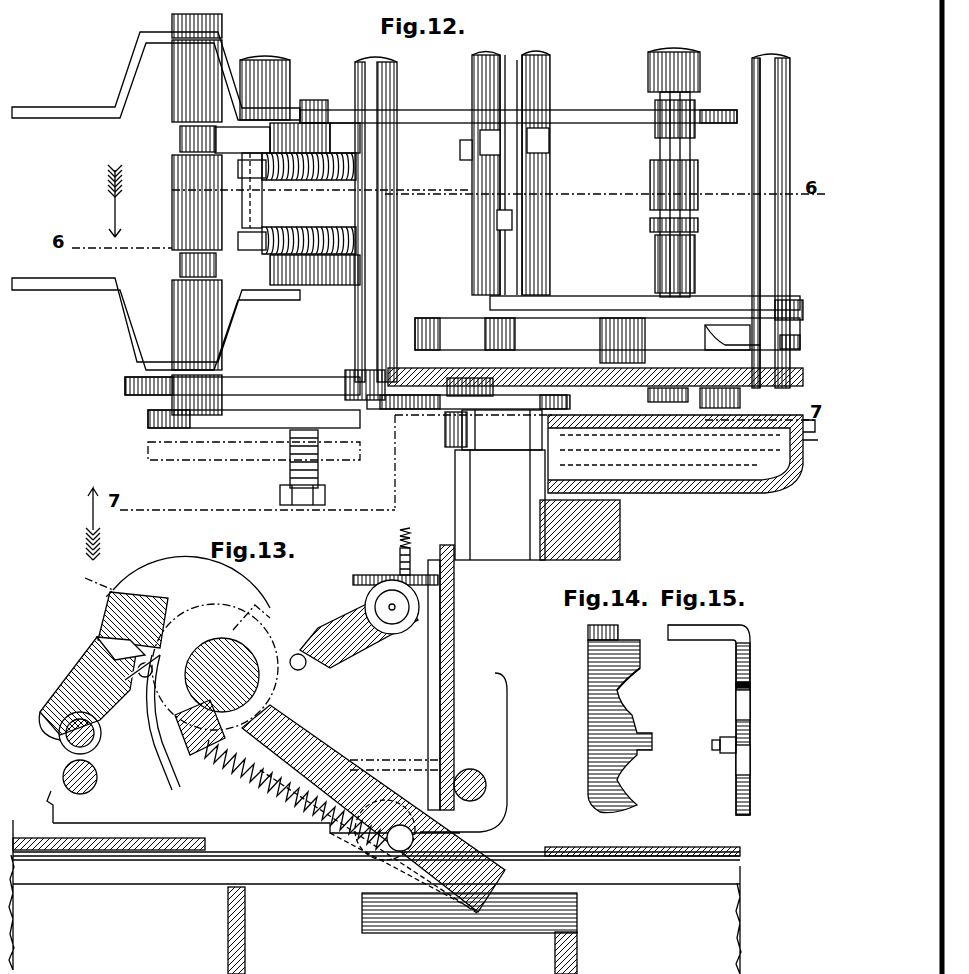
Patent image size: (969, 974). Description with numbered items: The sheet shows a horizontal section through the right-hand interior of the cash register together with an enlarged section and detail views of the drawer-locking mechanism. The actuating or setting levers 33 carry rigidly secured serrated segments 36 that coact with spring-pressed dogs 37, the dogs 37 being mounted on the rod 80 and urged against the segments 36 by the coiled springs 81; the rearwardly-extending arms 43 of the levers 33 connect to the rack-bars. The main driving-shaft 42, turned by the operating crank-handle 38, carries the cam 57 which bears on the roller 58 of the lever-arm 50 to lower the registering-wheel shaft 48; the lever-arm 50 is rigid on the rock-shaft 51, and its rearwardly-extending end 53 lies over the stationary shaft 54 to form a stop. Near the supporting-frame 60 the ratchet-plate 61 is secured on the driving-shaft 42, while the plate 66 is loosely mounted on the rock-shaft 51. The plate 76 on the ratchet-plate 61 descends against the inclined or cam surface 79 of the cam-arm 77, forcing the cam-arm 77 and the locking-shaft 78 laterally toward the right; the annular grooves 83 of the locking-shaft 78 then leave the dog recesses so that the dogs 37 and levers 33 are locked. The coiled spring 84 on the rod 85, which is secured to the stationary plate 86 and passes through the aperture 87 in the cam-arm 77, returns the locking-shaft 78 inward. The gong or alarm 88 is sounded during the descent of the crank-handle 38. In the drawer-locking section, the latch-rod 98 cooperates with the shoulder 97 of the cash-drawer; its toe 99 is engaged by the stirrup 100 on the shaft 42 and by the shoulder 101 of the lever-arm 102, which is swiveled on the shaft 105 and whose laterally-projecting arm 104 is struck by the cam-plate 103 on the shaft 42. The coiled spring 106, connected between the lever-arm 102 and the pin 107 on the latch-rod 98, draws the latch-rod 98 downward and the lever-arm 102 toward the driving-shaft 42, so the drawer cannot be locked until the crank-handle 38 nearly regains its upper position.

In FIG. 12, the actuating or setting lever 33 is at (85, 107).
In FIG. 12, the serrated segment 36 is at (318, 107).
In FIG. 12, the dog 37 is at (285, 100).
In FIG. 12, the operating crank-handle 38 is at (580, 530).
In FIG. 12, the main driving-shaft 42 is at (516, 173).
In FIG. 13, the main driving-shaft 42 is at (280, 703).
In FIG. 12, the rearwardly-extending arm 43 is at (687, 172).
In FIG. 12, the registering-wheel shaft 48 is at (485, 183).
In FIG. 12, the lever-arm 50 is at (570, 296).
In FIG. 12, the rock-shaft 51 is at (700, 265).
In FIG. 12, the rearwardly-extending end 53 is at (795, 310).
In FIG. 12, the shaft 54 is at (790, 243).
In FIG. 12, the cam 57 is at (607, 334).
In FIG. 12, the roller 58 is at (618, 318).
In FIG. 12, the supporting-frame 60 is at (430, 412).
In FIG. 12, the ratchet-plate 61 is at (468, 393).
In FIG. 12, the plate 66 is at (725, 400).
In FIG. 12, the plate 76 is at (460, 440).
In FIG. 12, the cam-arm 77 is at (148, 425).
In FIG. 12, the locking-shaft 78 is at (172, 216).
In FIG. 12, the inclined or cam surface 79 is at (348, 372).
In FIG. 12, the rod 80 is at (265, 81).
In FIG. 12, the coiled spring 81 is at (330, 178).
In FIG. 12, the annular groove 83 is at (180, 136).
In FIG. 12, the coiled spring 84 is at (290, 470).
In FIG. 12, the rod 85 is at (316, 492).
In FIG. 12, the stationary plate 86 is at (262, 385).
In FIG. 12, the aperture 87 is at (285, 418).
In FIG. 12, the gong or alarm 88 is at (683, 460).
In FIG. 13, the shoulder 97 is at (469, 933).
In FIG. 13, the latch-rod 98 is at (480, 830).
In FIG. 13, the toe 99 is at (138, 670).
In FIG. 13, the stirrup 100 is at (170, 600).
In FIG. 13, the shoulder 101 is at (105, 648).
In FIG. 14, the shoulder 101 is at (625, 685).
In FIG. 15, the shoulder 101 is at (752, 686).
In FIG. 13, the lever-arm 102 is at (60, 688).
In FIG. 14, the lever-arm 102 is at (588, 718).
In FIG. 15, the lever-arm 102 is at (752, 716).
In FIG. 13, the cam-plate 103 is at (152, 755).
In FIG. 13, the laterally-projecting arm 104 is at (145, 595).
In FIG. 14, the laterally-projecting arm 104 is at (618, 632).
In FIG. 15, the laterally-projecting arm 104 is at (695, 638).
In FIG. 13, the shaft 105 is at (58, 753).
In FIG. 13, the coiled spring 106 is at (230, 755).
In FIG. 13, the pin 107 is at (358, 850).